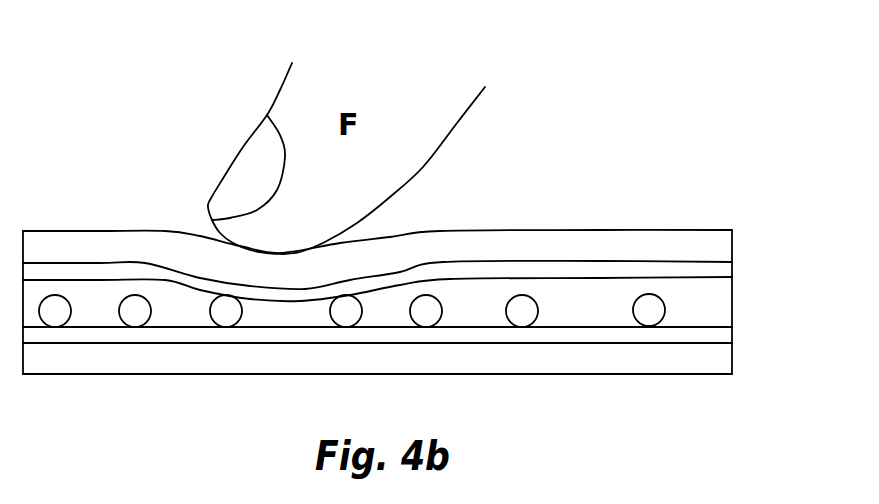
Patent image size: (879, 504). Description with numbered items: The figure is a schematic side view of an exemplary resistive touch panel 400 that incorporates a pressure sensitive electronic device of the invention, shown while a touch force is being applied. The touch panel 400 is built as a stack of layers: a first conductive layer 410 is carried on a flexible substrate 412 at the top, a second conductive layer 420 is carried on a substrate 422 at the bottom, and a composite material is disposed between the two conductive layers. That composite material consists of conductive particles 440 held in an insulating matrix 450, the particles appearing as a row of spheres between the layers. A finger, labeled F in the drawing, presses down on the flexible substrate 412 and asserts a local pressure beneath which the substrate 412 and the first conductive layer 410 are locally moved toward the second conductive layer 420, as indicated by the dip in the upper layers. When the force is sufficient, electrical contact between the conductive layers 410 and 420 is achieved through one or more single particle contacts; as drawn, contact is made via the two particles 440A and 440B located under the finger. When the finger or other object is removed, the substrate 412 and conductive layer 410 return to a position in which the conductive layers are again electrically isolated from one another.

The resistive touch panel 400 is at (610, 175).
The first conductive layer 410 is at (723, 273).
The flexible substrate 412 is at (695, 245).
The second conductive layer 420 is at (723, 337).
The substrate 422 is at (722, 360).
The conductive particles 440 is at (133, 298).
The conductive particle 440A is at (225, 315).
The conductive particle 440B is at (345, 315).
The insulating matrix 450 is at (95, 315).